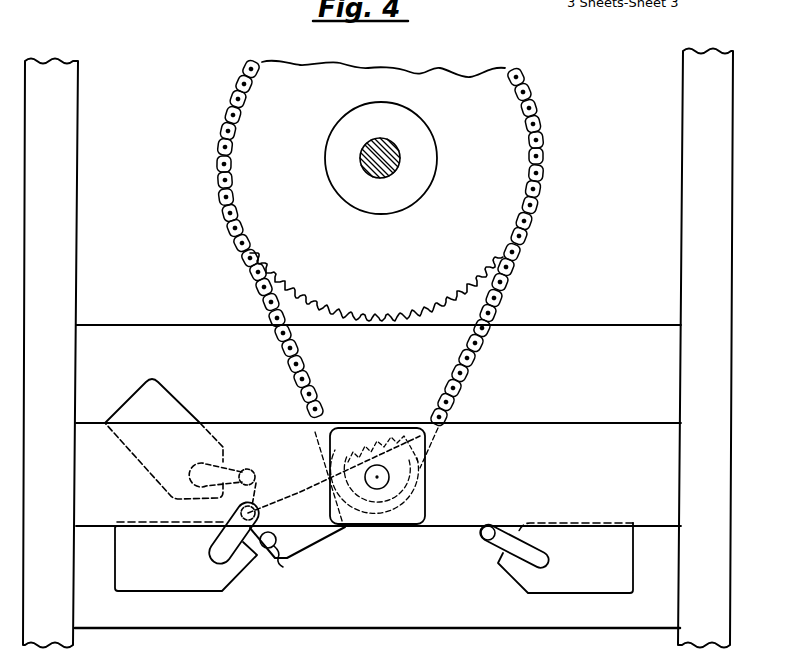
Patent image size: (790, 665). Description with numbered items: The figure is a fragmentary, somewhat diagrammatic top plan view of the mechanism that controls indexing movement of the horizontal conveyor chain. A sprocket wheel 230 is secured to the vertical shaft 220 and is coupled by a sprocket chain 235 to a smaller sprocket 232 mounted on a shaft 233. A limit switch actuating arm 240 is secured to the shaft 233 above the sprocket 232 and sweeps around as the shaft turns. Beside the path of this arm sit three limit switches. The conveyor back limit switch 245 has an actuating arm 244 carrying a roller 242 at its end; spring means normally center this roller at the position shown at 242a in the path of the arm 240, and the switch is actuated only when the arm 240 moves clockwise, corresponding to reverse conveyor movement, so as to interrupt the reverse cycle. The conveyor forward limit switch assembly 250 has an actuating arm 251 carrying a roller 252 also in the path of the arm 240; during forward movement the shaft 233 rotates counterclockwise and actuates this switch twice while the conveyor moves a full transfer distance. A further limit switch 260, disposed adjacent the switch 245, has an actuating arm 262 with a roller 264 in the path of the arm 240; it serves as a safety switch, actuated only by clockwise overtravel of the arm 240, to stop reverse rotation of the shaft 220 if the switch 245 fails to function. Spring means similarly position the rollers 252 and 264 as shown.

The vertical shaft 220 is at (380, 137).
The sprocket wheel 230 is at (510, 133).
The sprocket chain 235 is at (510, 267).
The smaller sprocket 232 is at (375, 432).
The shaft 233 is at (379, 488).
The limit switch 260 is at (145, 378).
The actuating arm 262 is at (230, 467).
The roller 264 is at (255, 472).
The roller 242 is at (263, 486).
The normal position of roller 242a is at (283, 568).
The limit switch actuating arm 240 is at (307, 550).
The limit switch actuating arm 244 is at (232, 556).
The conveyor back limit switch 245 is at (152, 586).
The roller 252 is at (482, 538).
The actuating arm 251 is at (502, 563).
The conveyor forward limit switch assembly 250 is at (578, 594).